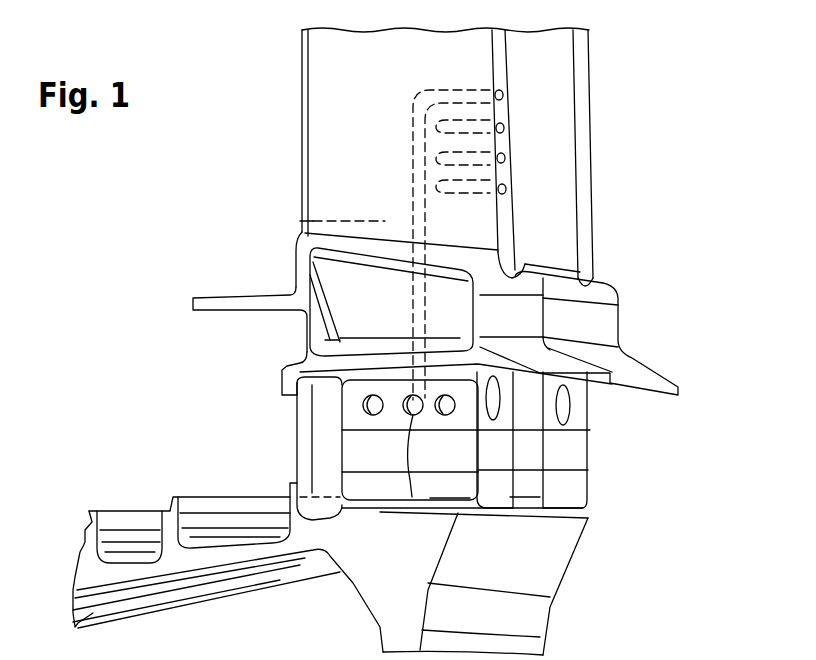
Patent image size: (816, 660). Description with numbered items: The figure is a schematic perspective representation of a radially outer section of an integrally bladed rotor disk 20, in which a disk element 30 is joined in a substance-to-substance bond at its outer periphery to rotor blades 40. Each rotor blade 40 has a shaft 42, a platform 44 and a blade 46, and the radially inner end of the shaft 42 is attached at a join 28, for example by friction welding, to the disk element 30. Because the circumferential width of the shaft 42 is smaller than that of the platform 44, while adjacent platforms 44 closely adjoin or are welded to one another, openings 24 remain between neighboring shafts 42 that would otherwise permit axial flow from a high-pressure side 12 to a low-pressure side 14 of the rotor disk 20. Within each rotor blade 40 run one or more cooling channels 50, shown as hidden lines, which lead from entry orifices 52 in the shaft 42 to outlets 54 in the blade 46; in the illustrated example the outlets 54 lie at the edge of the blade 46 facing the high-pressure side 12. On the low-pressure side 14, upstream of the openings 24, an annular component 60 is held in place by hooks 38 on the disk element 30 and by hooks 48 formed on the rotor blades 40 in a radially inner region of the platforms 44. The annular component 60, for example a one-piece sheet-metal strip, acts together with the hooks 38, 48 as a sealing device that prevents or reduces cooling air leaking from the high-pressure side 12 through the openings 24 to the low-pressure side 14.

The high-pressure side 12 is at (648, 292).
The low-pressure side 14 is at (197, 330).
The integrally bladed rotor disk 20 is at (194, 260).
The openings 24 is at (533, 450).
The join 28 is at (565, 470).
The disk element 30 is at (512, 612).
The hooks 38 is at (292, 492).
The rotor blades 40 is at (578, 178).
The shaft 42 is at (342, 455).
The platform 44 is at (310, 266).
The blade 46 is at (330, 108).
The hooks 48 is at (286, 388).
The cooling channels 50 is at (412, 196).
The entry orifices 52 is at (568, 408).
The outlets 54 is at (500, 127).
The annular component 60 is at (304, 457).